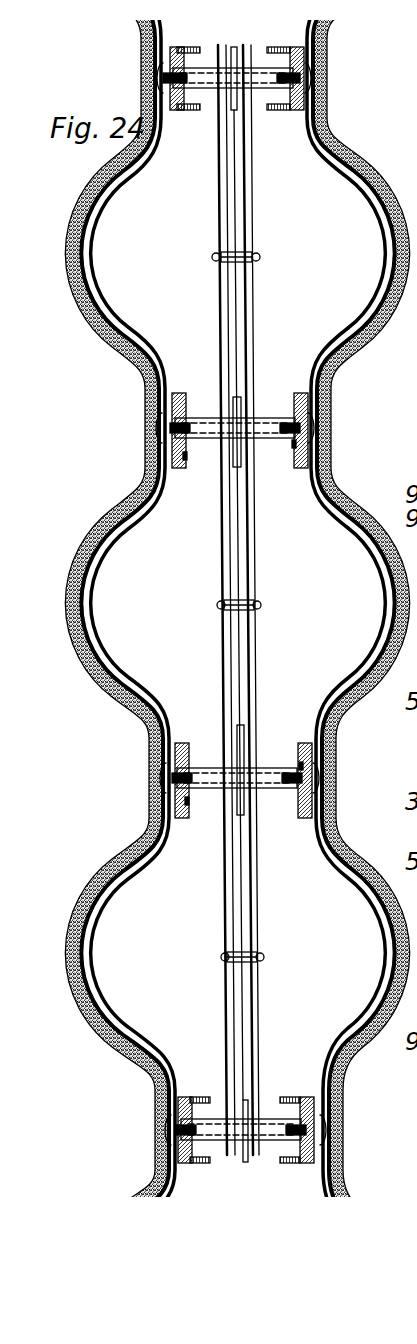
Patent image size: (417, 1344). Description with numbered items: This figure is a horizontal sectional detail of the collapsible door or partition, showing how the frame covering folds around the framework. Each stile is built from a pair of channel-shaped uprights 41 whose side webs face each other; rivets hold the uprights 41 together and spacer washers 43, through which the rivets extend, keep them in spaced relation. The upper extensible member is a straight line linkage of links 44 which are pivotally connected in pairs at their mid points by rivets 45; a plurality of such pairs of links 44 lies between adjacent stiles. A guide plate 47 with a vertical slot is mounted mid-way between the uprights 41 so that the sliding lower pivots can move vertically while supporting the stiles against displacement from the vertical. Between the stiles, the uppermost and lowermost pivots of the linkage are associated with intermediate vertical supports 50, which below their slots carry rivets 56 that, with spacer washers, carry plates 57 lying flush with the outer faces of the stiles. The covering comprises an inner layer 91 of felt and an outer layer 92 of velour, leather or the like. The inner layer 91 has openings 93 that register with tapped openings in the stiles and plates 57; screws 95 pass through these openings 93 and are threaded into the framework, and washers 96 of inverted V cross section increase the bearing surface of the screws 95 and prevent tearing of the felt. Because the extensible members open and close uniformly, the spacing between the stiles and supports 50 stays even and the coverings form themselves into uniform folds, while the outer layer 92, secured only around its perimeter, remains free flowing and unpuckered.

The uprights 41 is at (181, 111).
The spacer washers 43 is at (283, 1133).
The links 44 is at (251, 194).
The rivets 45 is at (257, 255).
The guide plate 47 is at (236, 48).
The intermediate vertical supports 50 is at (231, 437).
The rivets 56 is at (262, 417).
The plates 57 is at (185, 458).
The inner layer 91 is at (156, 361).
The outer layer 92 is at (140, 381).
The openings 93 is at (176, 414).
The screws 95 is at (188, 767).
The washers 96 is at (318, 765).